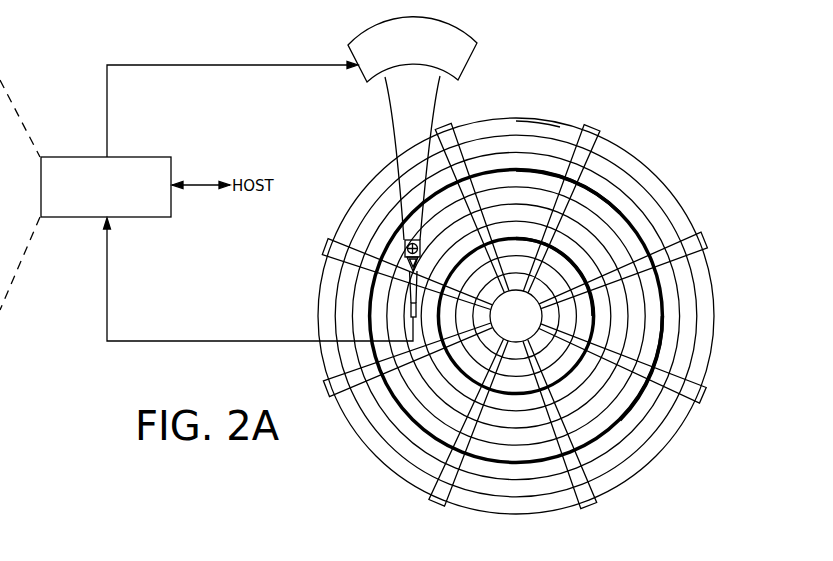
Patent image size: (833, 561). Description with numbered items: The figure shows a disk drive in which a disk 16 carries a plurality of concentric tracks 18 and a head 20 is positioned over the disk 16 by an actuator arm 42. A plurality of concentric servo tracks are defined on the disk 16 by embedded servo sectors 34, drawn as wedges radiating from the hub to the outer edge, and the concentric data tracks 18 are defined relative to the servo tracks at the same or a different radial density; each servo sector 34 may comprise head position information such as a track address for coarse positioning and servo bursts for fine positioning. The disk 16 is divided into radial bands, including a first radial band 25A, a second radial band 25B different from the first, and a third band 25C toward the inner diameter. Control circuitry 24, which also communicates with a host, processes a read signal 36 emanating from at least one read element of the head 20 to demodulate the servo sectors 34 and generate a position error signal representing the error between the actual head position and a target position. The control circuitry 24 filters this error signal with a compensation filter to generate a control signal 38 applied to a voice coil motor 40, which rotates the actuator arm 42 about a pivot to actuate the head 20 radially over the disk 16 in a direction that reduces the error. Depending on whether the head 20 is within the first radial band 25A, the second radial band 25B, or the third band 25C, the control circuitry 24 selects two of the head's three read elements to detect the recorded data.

The disk 16 is at (657, 158).
The tracks 18 is at (519, 147).
The head 20 is at (397, 304).
The control circuitry 24 is at (141, 157).
The first radial band 25A is at (643, 298).
The second radial band 25B is at (697, 334).
The third band 25C is at (571, 274).
The servo sectors 34 is at (517, 318).
The read signal 36 is at (214, 341).
The control signal 38 is at (107, 101).
The voice coil motor 40 is at (362, 74).
The actuator arm 42 is at (397, 144).